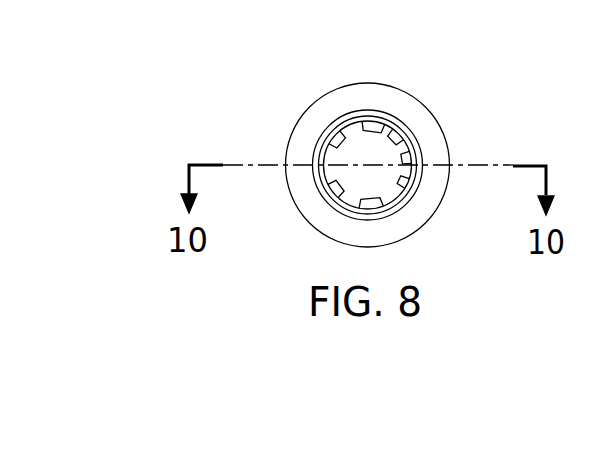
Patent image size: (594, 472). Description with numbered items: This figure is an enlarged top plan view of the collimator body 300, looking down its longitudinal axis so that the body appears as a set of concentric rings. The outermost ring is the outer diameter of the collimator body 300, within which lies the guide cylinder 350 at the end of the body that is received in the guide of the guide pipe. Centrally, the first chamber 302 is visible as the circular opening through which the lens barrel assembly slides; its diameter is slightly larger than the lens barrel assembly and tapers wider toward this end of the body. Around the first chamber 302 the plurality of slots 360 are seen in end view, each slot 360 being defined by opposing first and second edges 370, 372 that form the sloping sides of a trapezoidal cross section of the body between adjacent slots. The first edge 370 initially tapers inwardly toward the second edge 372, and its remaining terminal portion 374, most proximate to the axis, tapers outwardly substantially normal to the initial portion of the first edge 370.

The collimator body 300 is at (213, 102).
The first chamber 302 is at (362, 148).
The guide cylinder 350 is at (317, 137).
The slots 360 is at (340, 208).
The first edge 370 is at (390, 201).
The second edge 372 is at (405, 137).
The terminal portion 374 is at (393, 193).